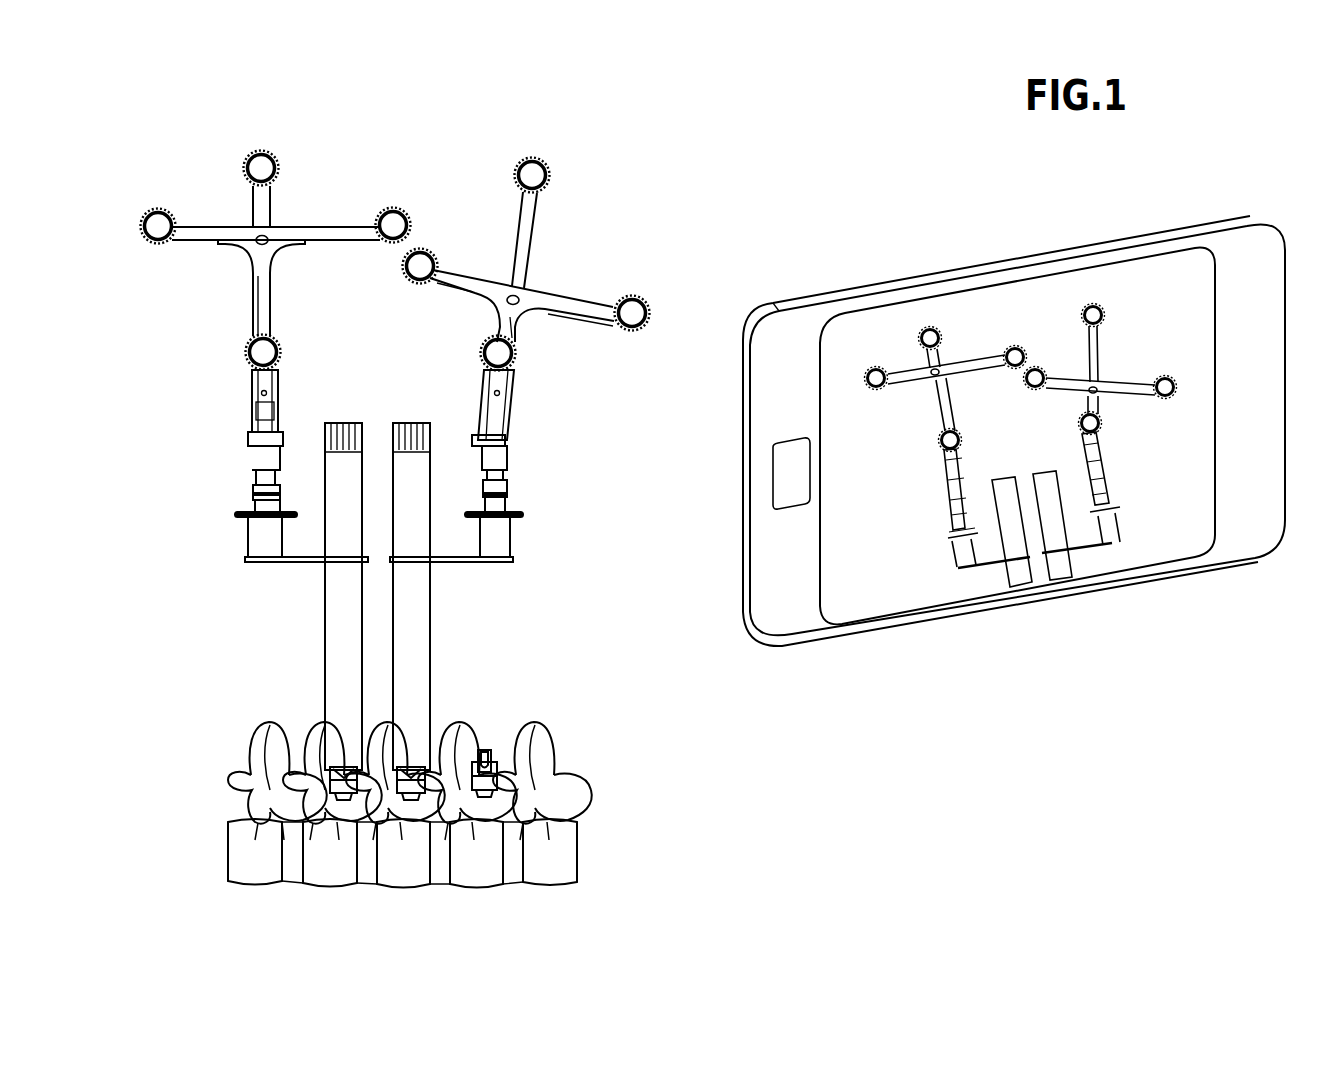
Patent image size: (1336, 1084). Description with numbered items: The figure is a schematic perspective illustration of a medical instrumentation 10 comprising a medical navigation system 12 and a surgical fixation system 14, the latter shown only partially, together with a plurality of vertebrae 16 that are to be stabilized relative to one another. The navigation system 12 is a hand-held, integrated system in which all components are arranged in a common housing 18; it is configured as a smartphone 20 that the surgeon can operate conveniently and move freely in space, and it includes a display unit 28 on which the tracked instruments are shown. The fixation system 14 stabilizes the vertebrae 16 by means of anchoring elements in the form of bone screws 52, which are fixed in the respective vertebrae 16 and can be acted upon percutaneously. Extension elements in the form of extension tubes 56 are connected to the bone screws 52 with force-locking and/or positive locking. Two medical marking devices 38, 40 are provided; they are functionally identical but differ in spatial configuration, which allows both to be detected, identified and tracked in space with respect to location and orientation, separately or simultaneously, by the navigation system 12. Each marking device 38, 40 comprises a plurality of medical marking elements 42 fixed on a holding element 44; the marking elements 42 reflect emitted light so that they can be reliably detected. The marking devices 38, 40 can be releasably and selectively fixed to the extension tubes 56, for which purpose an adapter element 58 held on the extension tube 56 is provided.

The medical instrumentation 10 is at (670, 176).
The medical navigation system 12 is at (903, 248).
The surgical fixation system 14 is at (201, 124).
The vertebrae 16 is at (249, 870).
The common housing 18 is at (788, 614).
The smartphone 20 is at (1238, 530).
The display unit 28 is at (1153, 543).
The medical marking device 38 is at (235, 265).
The medical marking device 40 is at (546, 273).
The medical marking elements 42 is at (258, 168).
The holding element 44 is at (328, 231).
The bone screws 52 is at (345, 768).
The extension tubes 56 is at (345, 602).
The adapter element 58 is at (262, 540).